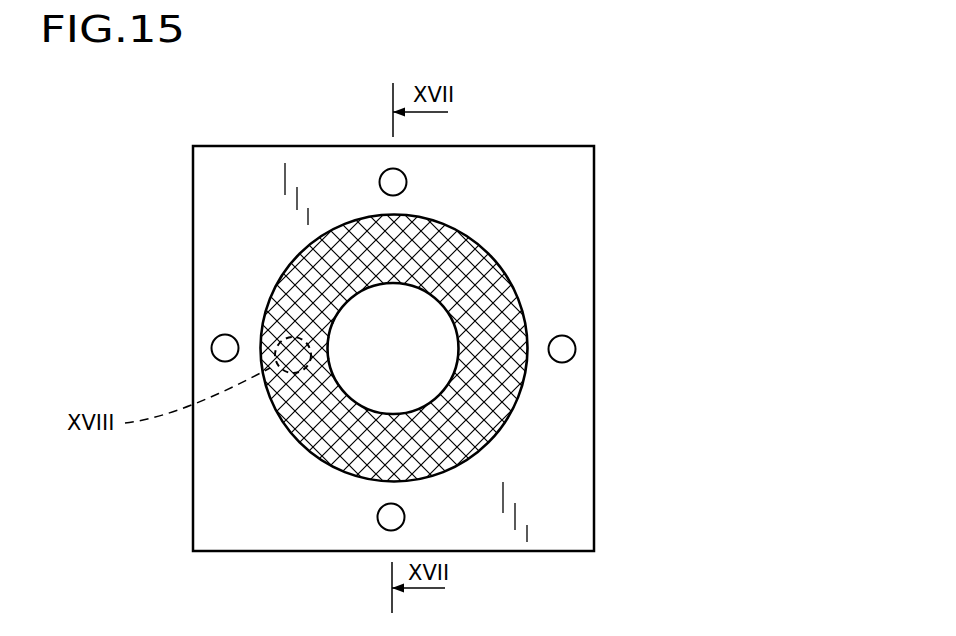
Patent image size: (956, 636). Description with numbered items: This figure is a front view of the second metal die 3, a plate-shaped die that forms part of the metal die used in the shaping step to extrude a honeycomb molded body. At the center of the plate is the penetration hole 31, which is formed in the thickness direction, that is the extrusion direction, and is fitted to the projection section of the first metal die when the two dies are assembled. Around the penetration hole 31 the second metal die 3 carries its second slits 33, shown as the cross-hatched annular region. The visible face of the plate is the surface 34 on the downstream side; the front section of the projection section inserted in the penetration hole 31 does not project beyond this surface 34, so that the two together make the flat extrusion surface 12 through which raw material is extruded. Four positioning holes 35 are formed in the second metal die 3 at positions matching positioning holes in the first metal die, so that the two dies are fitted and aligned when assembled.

The second metal die 3 is at (567, 130).
The extrusion surface 12 is at (545, 420).
The penetration hole 31 is at (422, 318).
The second slits 33 is at (347, 256).
The surface 34 is at (253, 253).
The positioning hole 35 is at (226, 348).